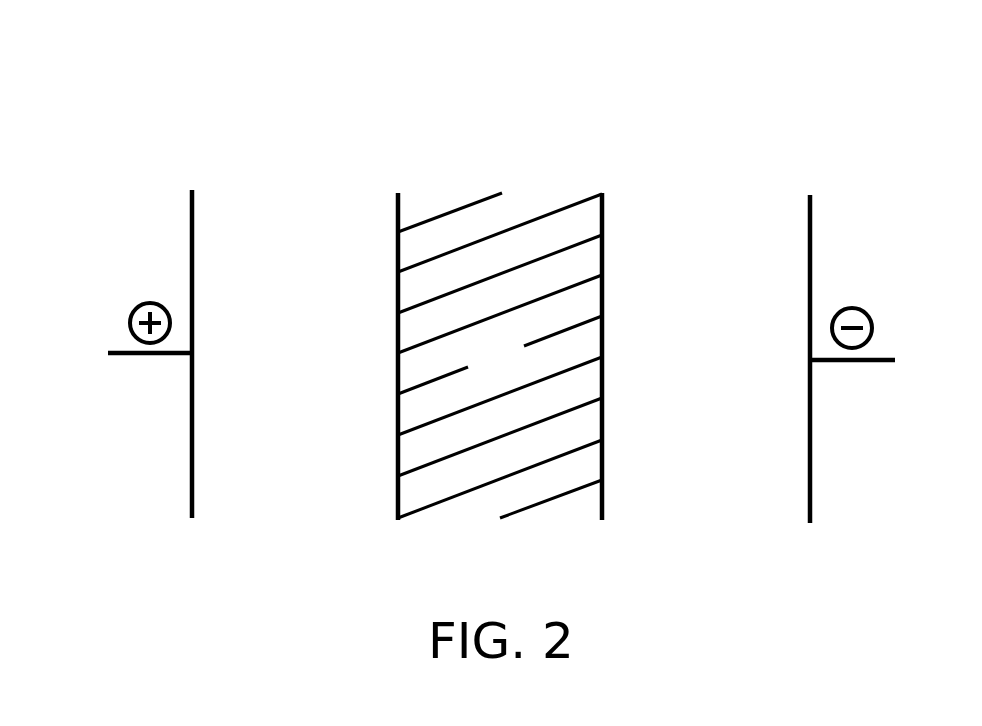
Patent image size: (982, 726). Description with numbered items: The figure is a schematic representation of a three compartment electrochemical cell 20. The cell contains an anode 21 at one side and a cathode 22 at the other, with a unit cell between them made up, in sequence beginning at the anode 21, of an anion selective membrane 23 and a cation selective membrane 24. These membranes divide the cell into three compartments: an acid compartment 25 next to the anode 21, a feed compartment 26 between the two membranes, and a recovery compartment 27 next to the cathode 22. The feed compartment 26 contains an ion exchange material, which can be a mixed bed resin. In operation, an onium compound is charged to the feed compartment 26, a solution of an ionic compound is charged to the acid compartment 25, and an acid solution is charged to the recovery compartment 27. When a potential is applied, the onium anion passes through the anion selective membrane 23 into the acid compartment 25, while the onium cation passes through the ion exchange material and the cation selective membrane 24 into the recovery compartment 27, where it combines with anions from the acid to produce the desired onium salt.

The electrochemical cell 20 is at (163, 115).
The anode 21 is at (158, 335).
The cathode 22 is at (842, 341).
The anion selective membrane 23 is at (396, 361).
The cation selective membrane 24 is at (604, 361).
The acid compartment 25 is at (295, 355).
The feed compartment 26 is at (500, 355).
The recovery compartment 27 is at (705, 357).